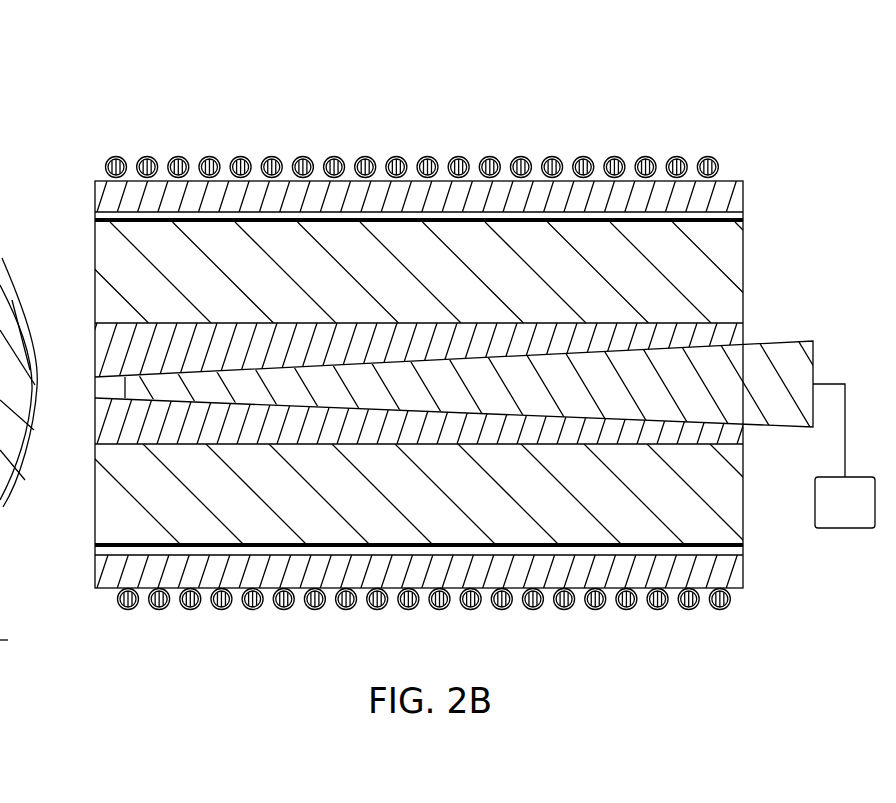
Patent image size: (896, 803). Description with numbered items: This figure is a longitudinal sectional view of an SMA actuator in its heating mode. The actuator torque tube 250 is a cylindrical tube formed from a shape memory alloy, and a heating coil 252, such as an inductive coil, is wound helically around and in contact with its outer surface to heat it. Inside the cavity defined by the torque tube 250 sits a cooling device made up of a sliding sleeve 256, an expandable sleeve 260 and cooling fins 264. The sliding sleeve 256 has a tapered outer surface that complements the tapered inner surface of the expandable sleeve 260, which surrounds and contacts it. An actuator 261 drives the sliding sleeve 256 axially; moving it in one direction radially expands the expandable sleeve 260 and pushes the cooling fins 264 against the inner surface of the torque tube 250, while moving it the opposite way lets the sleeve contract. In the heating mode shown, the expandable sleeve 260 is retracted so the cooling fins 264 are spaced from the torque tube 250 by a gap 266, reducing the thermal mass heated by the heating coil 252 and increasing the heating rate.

The actuator torque tube 250 is at (733, 181).
The heating coil 252 is at (148, 157).
The sliding sleeve 256 is at (793, 341).
The expandable sleeve 260 is at (427, 323).
The actuator 261 is at (865, 513).
The cooling fins 264 is at (300, 263).
The gap 266 is at (95, 221).